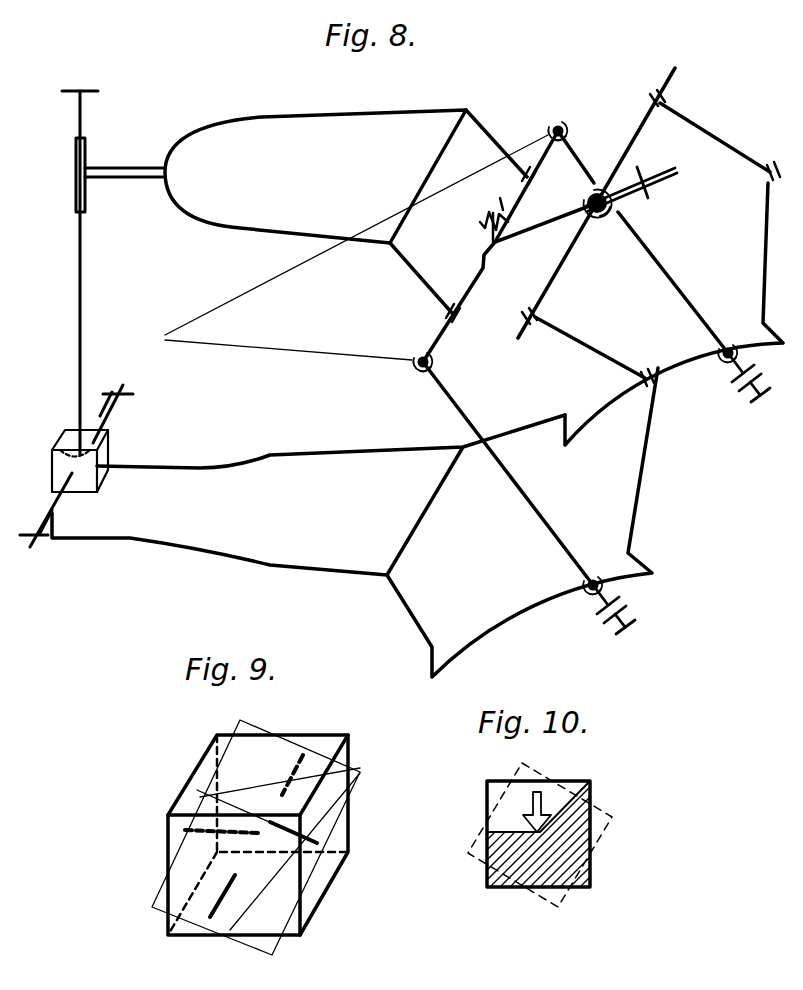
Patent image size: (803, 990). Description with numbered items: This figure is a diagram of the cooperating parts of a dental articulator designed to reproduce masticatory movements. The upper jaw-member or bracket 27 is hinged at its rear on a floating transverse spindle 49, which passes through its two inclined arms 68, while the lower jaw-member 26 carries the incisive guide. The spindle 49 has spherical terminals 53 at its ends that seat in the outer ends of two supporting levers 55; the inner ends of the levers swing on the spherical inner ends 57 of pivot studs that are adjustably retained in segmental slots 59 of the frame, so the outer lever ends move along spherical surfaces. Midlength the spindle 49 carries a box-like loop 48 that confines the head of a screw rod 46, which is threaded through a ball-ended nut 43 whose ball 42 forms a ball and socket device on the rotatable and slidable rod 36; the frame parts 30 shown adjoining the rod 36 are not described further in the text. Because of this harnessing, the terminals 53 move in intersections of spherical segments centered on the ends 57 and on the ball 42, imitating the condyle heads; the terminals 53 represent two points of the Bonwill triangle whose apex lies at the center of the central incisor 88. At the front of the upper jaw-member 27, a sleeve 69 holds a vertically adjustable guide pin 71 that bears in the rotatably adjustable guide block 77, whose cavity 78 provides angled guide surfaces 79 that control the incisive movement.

In FIG. 8, the lower jaw-member 26 is at (238, 466).
In FIG. 8, the upper jaw-member or bracket 27 is at (296, 120).
In FIG. 8, the link 30 is at (722, 143).
In FIG. 8, the rod 36 is at (562, 265).
In FIG. 8, the spherical end or ball 42 is at (605, 218).
In FIG. 8, the nut 43 is at (626, 197).
In FIG. 8, the screw rod 46 is at (544, 228).
In FIG. 8, the box-like member or loop 48 is at (487, 252).
In FIG. 8, the spindle 49 is at (474, 296).
In FIG. 8, the spherical terminals 53 is at (572, 124).
In FIG. 8, the supporting levers 55 is at (676, 298).
In FIG. 8, the spherical inner ends 57 is at (720, 360).
In FIG. 8, the segmental slots 59 is at (695, 420).
In FIG. 8, the arms 68 is at (496, 148).
In FIG. 8, the sleeve 69 is at (86, 203).
In FIG. 8, the guide pin 71 is at (82, 249).
In FIG. 8, the guide block 77 is at (105, 452).
In FIG. 9, the guide block 77 is at (348, 752).
In FIG. 10, the guide block 77 is at (592, 787).
In FIG. 9, the cavity 78 is at (235, 785).
In FIG. 10, the cavity 78 is at (510, 798).
In FIG. 9, the guide surfaces 79 is at (285, 752).
In FIG. 10, the guide surfaces 79 is at (553, 788).
In FIG. 8, the center of the central incisor 88 is at (346, 247).